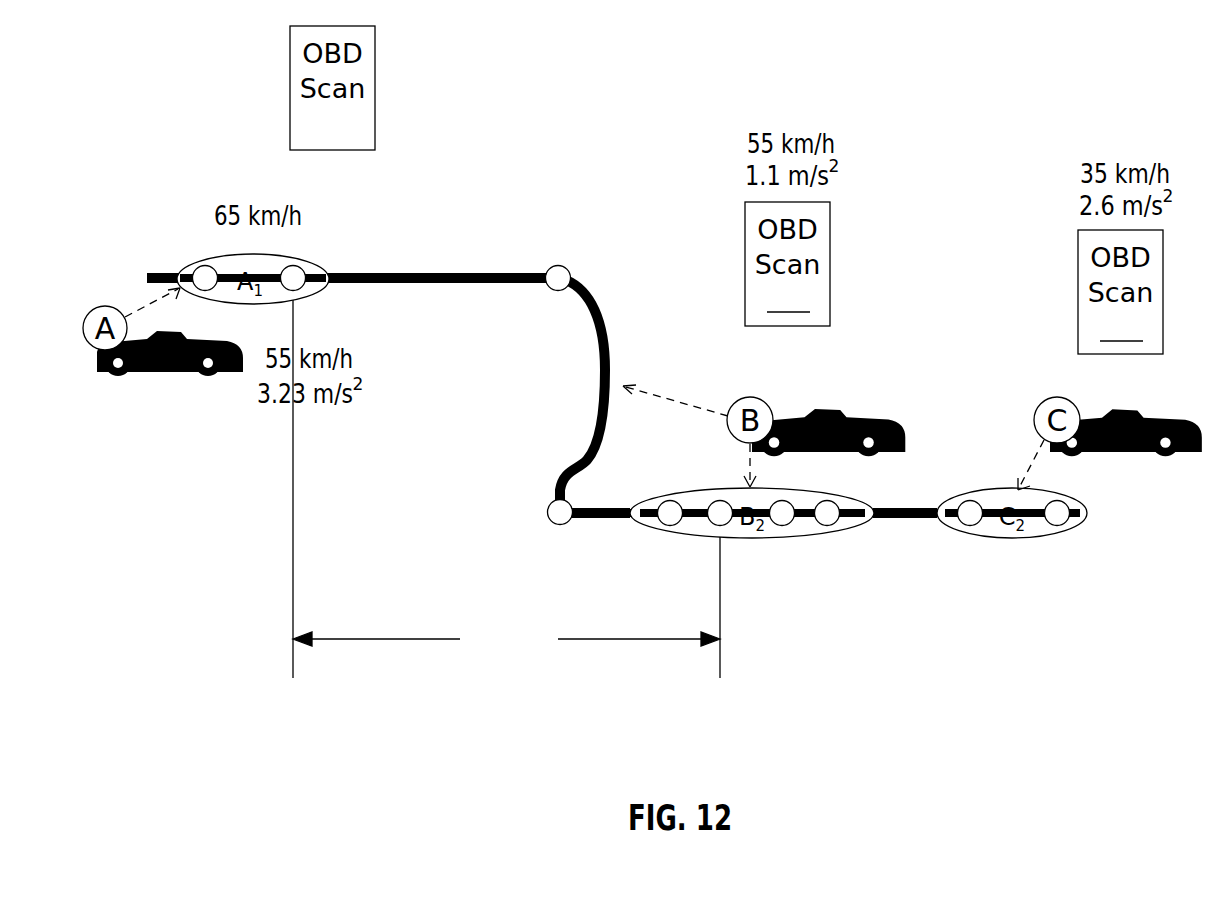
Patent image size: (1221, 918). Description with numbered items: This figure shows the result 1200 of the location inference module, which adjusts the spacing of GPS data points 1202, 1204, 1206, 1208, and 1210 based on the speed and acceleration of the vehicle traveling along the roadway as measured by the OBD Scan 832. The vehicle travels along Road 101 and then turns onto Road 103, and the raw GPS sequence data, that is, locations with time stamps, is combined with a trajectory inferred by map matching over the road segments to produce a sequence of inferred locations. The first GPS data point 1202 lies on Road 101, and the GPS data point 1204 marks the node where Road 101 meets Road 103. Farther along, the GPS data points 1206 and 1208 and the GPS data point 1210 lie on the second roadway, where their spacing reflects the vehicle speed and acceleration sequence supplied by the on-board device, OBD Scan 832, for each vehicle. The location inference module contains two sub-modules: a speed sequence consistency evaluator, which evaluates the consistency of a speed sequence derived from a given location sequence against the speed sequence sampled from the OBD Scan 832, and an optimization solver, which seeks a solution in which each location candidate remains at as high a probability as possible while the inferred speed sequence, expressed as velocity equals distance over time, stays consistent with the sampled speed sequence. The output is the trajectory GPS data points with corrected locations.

The location inference result 1200 is at (614, 71).
The GPS data point 1202 is at (205, 266).
The GPS data point 1204 is at (558, 266).
The GPS data point 1206 is at (668, 527).
The GPS data point 1208 is at (828, 527).
The GPS data point 1210 is at (1056, 527).
The OBD scan 832 is at (354, 137).
The road 101 is at (347, 261).
The road 103 is at (820, 396).